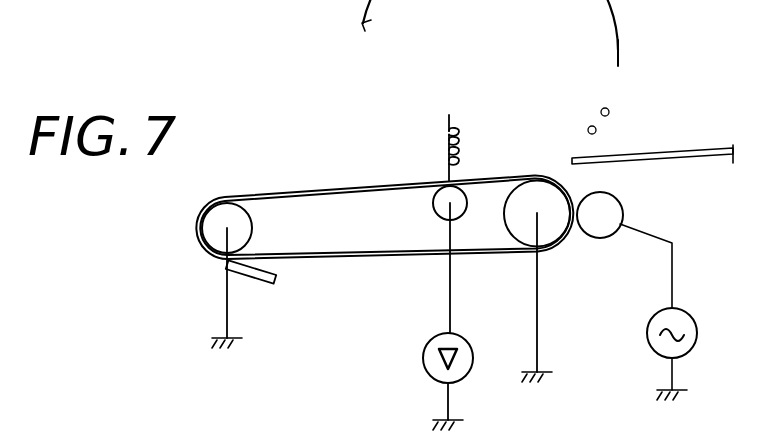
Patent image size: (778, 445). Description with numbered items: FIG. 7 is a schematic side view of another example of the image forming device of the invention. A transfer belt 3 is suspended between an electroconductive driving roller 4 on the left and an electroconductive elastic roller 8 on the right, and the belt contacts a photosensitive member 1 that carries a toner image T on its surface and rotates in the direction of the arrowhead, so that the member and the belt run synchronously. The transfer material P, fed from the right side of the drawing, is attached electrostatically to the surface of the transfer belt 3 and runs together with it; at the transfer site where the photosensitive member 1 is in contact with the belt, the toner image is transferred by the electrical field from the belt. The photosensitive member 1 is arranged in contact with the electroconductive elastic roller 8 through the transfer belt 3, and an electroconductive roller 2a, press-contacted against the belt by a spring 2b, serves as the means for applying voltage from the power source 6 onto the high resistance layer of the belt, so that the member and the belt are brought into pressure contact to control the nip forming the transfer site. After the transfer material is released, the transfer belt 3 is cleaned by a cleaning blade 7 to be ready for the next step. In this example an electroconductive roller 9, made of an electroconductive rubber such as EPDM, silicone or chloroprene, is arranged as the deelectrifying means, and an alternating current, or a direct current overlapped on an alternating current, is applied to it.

The photosensitive member 1 is at (606, 53).
The toner image T is at (609, 112).
The transfer material P is at (715, 148).
The transfer belt 3 is at (355, 258).
The electroconductive driving roller 4 is at (252, 222).
The cleaning blade 7 is at (270, 284).
The electroconductive roller 2a is at (434, 211).
The spring 2b is at (462, 150).
The electroconductive elastic roller 8 is at (556, 230).
The electroconductive roller 9 is at (623, 202).
The power source 6 is at (470, 373).